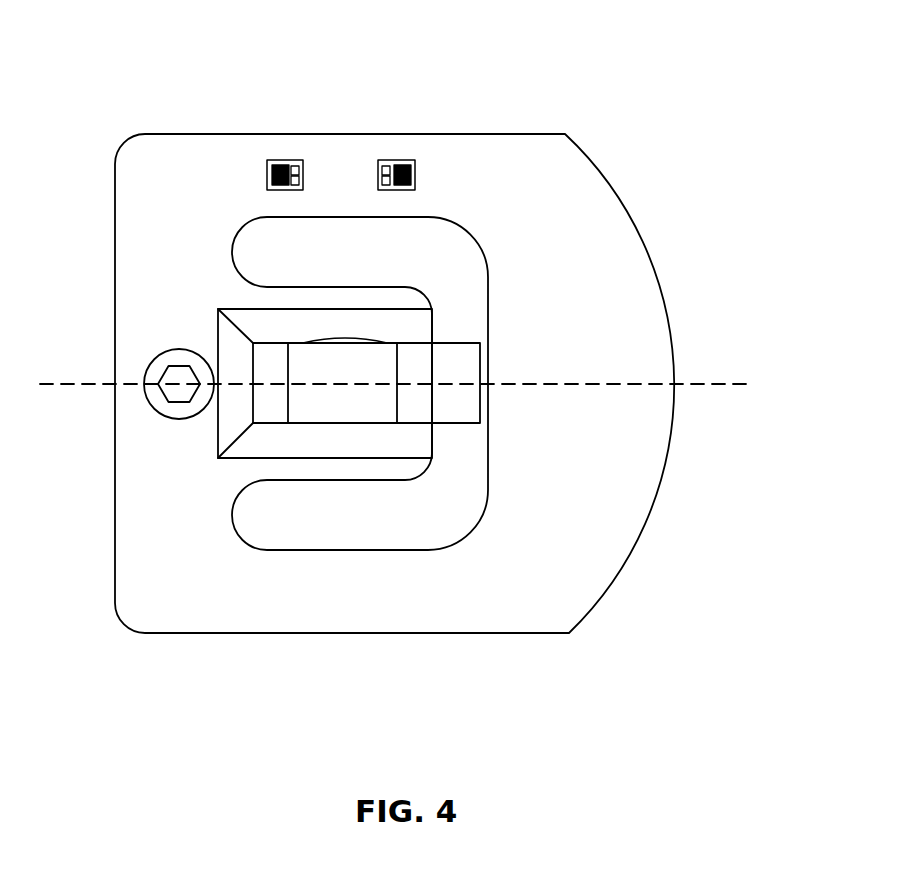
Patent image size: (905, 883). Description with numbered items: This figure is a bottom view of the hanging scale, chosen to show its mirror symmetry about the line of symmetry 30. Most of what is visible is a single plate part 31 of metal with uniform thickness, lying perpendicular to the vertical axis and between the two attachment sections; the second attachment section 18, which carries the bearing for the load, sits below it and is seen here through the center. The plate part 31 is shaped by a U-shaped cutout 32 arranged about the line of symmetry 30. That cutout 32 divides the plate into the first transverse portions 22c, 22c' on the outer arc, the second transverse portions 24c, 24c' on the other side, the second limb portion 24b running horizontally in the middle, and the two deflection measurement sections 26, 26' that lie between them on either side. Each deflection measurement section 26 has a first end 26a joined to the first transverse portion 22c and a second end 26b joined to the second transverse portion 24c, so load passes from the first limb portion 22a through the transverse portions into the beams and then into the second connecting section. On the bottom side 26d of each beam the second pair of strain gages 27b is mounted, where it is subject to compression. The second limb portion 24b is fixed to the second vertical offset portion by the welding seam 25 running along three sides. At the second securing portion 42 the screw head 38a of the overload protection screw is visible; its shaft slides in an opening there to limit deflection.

The second attachment section 18 is at (308, 410).
The first limb portion 22a is at (458, 408).
The first transverse portion 22c is at (430, 383).
The first transverse portion 22c' is at (648, 536).
The second limb portion 24b is at (348, 470).
The second transverse portion 24c is at (103, 241).
The second transverse portion 24c' is at (106, 517).
The welding seam 25 is at (243, 443).
The deflection measurement section 26 is at (360, 281).
The first end 26a is at (442, 170).
The second end 26b is at (249, 175).
The bottom side 26d is at (250, 206).
The deflection measurement section 26' is at (341, 670).
The second pair of strain gages 27b is at (287, 160).
The line of symmetry 30 is at (703, 388).
The plate part 31 is at (525, 170).
The U-shaped cutout 32 is at (440, 252).
The screw head 38a is at (162, 410).
The second securing portion 42 is at (157, 333).